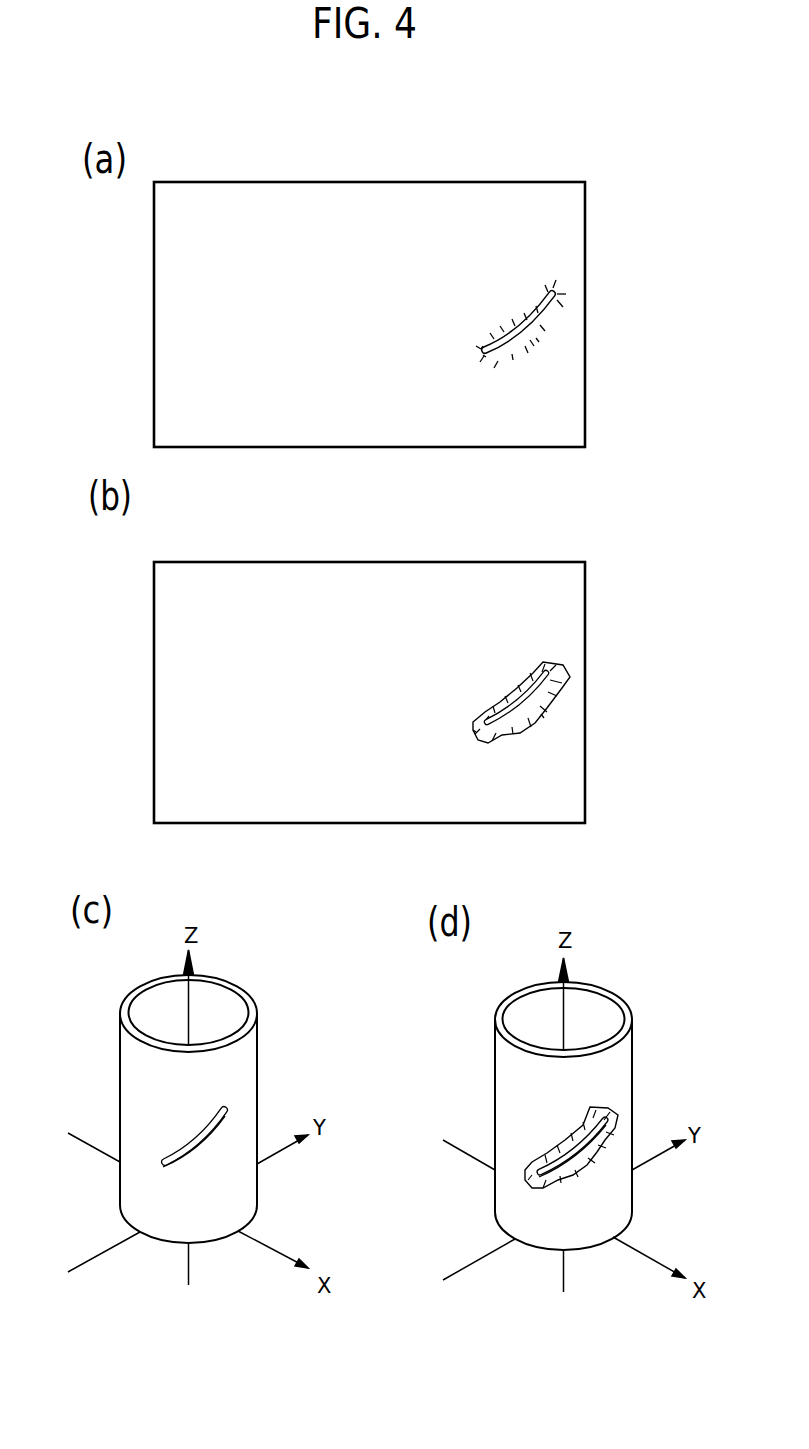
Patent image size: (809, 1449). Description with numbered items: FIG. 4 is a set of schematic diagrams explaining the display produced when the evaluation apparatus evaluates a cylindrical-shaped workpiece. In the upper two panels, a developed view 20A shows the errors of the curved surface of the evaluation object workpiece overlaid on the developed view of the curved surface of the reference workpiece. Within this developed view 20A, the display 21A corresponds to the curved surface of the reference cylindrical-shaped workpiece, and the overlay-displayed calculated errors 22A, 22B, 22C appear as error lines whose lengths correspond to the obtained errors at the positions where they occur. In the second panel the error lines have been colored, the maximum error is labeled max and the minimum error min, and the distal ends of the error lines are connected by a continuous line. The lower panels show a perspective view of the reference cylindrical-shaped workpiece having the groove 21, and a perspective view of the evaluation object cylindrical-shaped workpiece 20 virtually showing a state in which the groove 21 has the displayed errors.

The evaluation object cylindrical-shaped workpiece 20 is at (632, 1043).
The groove 21 is at (227, 1130).
The developed view 20A is at (508, 182).
The display corresponding to the curved surface of the reference cylindrical-shaped 21A is at (552, 296).
The display of overlay-displayed calculated errors 22A is at (483, 355).
The display of overlay-displayed calculated errors 22B is at (537, 340).
The display of overlay-displayed calculated errors 22C is at (483, 348).